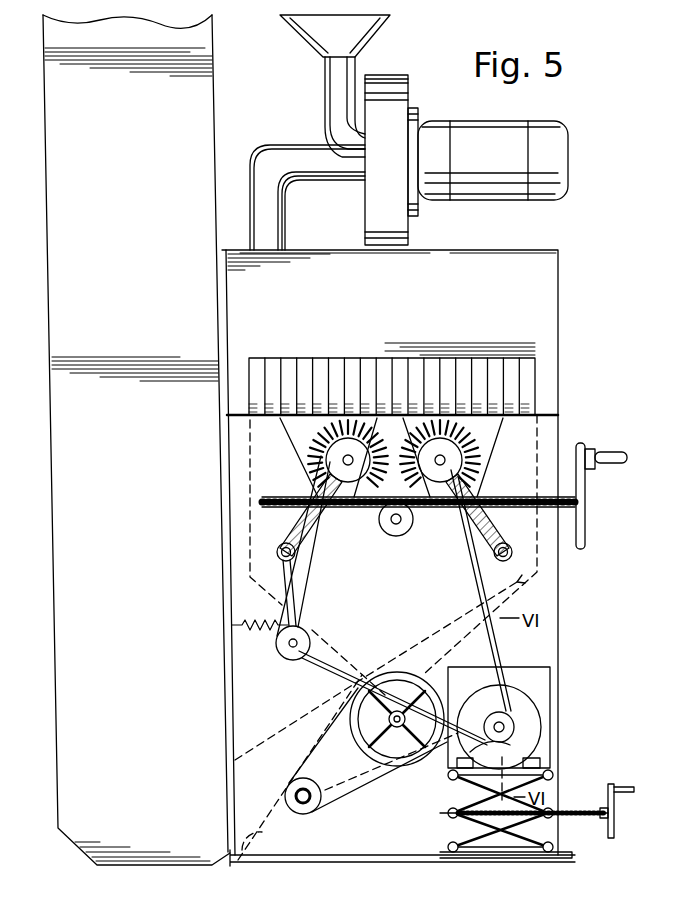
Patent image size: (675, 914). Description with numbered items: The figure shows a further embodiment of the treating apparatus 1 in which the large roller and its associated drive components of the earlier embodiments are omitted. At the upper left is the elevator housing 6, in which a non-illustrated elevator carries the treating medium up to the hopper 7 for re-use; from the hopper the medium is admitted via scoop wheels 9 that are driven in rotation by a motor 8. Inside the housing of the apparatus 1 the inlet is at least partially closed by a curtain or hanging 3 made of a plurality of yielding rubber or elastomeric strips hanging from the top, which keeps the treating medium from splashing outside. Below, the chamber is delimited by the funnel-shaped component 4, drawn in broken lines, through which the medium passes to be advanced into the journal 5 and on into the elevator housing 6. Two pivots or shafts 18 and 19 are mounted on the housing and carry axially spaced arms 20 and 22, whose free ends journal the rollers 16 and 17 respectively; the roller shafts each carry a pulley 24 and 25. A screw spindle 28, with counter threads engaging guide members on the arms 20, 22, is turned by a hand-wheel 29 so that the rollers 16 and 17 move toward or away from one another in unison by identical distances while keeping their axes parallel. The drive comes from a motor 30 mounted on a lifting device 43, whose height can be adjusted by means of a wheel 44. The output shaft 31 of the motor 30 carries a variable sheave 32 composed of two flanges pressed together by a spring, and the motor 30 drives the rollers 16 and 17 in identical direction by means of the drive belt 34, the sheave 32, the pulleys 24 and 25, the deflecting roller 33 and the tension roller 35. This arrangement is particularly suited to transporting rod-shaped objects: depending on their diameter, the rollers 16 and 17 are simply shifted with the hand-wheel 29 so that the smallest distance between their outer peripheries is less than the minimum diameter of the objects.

The apparatus 1 is at (562, 282).
The curtain or hanging 3 is at (515, 378).
The funnel-shaped component 4 is at (522, 582).
The journal 5 is at (243, 862).
The elevator housing 6 is at (70, 305).
The hopper 7 is at (332, 33).
The motor 8 is at (599, 136).
The scoop wheels 9 is at (393, 95).
The roller 16 is at (348, 421).
The roller 17 is at (447, 423).
The pivot or shaft 18 is at (281, 556).
The pivot or shaft 19 is at (509, 552).
The arms 20 is at (278, 546).
The arms 22 is at (505, 536).
The pulley 24 is at (347, 484).
The pulley 25 is at (441, 483).
The screw spindle 28 is at (507, 497).
The hand-wheel 29 is at (647, 415).
The motor 30 is at (515, 748).
The output shaft 31 is at (506, 727).
The variable sheave 32 is at (508, 709).
The deflecting roller 33 is at (397, 537).
The drive belt 34 is at (506, 650).
The tension roller 35 is at (291, 652).
The lifting device 43 is at (452, 833).
The wheel 44 is at (622, 806).